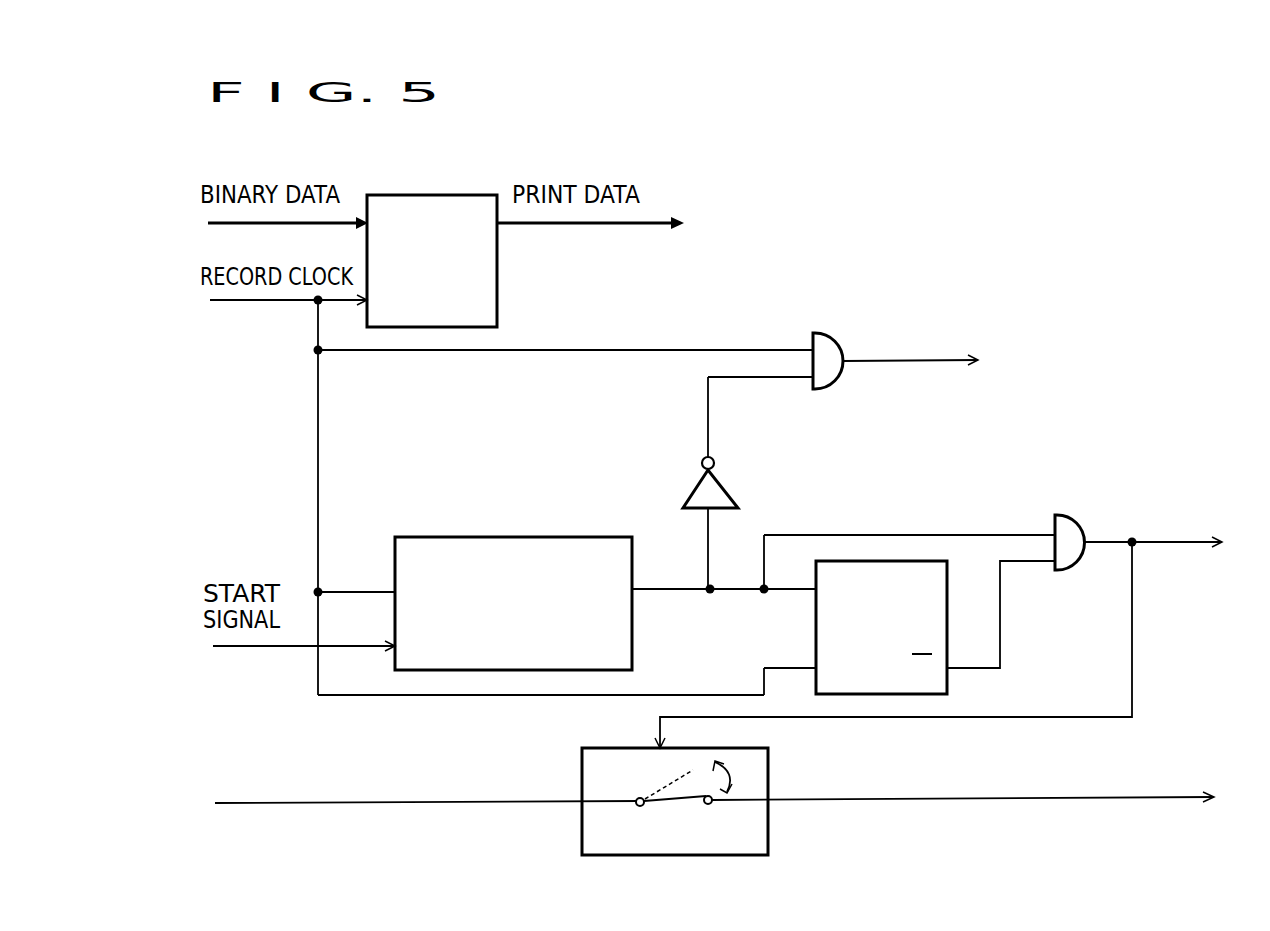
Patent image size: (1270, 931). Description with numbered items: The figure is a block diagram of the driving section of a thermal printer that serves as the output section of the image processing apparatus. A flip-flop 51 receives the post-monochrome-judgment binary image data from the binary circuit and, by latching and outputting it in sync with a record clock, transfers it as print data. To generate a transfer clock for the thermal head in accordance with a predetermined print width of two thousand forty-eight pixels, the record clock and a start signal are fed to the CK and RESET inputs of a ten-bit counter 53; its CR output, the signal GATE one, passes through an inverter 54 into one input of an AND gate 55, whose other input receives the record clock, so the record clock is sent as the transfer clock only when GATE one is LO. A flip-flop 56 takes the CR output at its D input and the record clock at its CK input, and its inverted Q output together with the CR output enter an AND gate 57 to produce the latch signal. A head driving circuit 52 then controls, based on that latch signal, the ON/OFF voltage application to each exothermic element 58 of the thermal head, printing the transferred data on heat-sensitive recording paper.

The flip-flop 51 is at (418, 195).
The head driving circuit 52 is at (582, 775).
The 10-bit counter 53 is at (474, 537).
The inverter 54 is at (722, 483).
The AND gate 55 is at (843, 378).
The flip-flop 56 is at (815, 618).
The AND gate 57 is at (1055, 516).
The exothermic element 58 is at (977, 780).